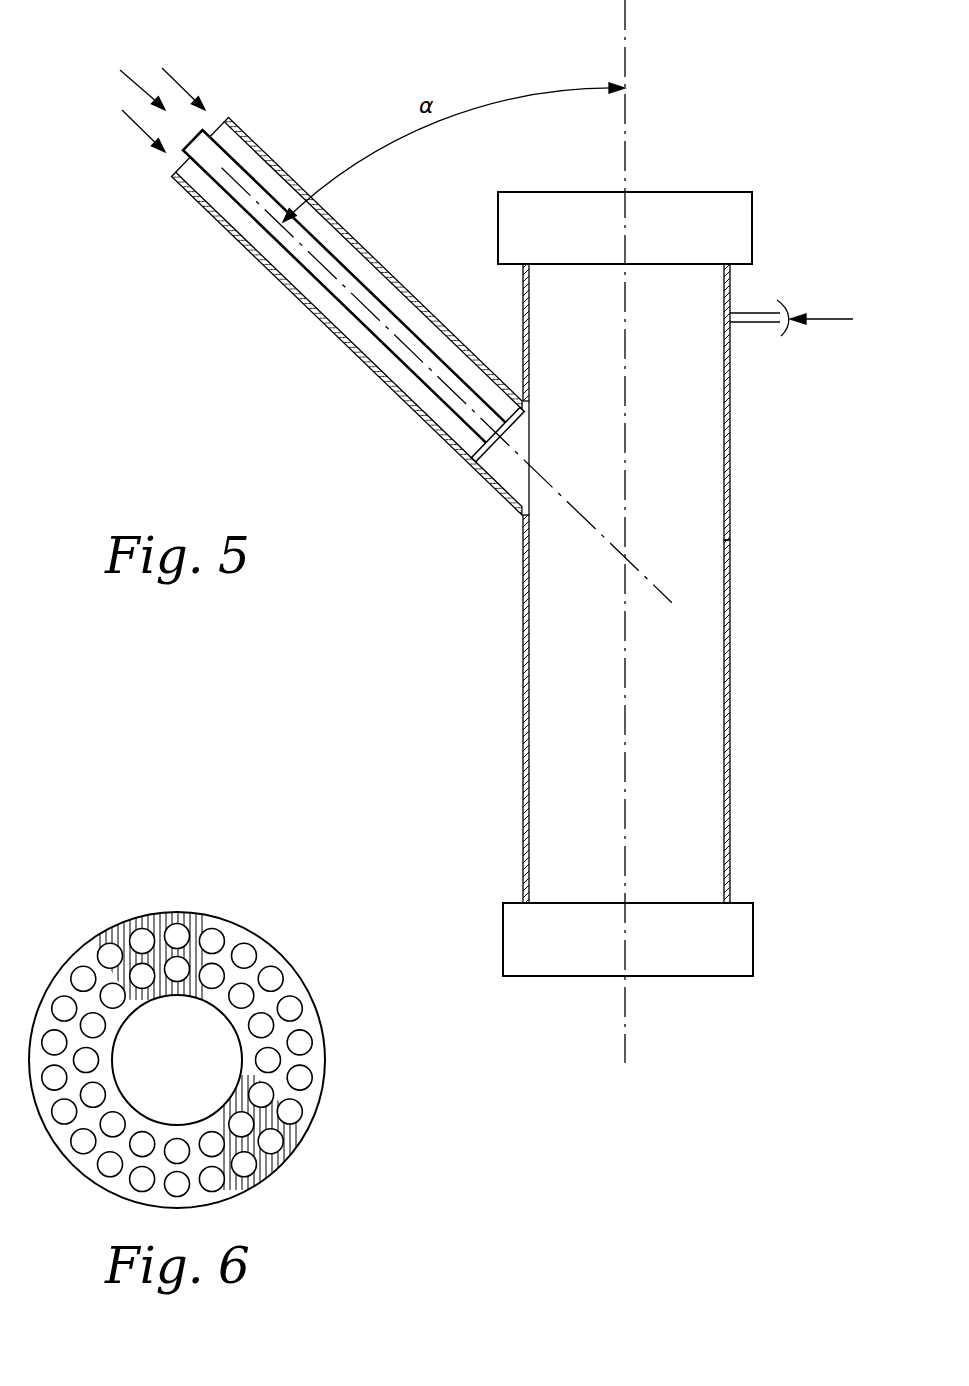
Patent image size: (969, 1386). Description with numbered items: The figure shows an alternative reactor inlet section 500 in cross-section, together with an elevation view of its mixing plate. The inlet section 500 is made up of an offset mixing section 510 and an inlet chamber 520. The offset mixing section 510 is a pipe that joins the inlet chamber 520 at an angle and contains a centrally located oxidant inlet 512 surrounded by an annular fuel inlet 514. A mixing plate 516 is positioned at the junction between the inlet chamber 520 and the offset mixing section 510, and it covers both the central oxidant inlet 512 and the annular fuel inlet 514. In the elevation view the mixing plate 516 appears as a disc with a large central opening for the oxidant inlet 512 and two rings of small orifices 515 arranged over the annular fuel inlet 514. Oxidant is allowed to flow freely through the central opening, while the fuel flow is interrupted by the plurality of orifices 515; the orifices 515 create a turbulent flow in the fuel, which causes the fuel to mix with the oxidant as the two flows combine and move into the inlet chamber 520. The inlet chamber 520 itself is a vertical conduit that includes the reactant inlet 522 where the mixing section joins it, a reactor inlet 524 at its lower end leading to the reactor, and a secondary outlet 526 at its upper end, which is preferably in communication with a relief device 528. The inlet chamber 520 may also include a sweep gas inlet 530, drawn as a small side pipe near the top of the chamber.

In FIG. 5, the reactor inlet section 500 is at (755, 584).
In FIG. 5, the offset mixing section 510 is at (308, 306).
In FIG. 5, the oxidant inlet 512 is at (190, 133).
In FIG. 6, the oxidant inlet 512 is at (198, 1073).
In FIG. 5, the annular fuel inlet 514 is at (215, 117).
In FIG. 6, the annular fuel inlet 514 is at (268, 958).
In FIG. 6, the orifices 515 is at (282, 1012).
In FIG. 5, the mixing plate 516 is at (470, 456).
In FIG. 6, the mixing plate 516 is at (327, 1057).
In FIG. 5, the inlet chamber 520 is at (731, 803).
In FIG. 5, the reactant inlet 522 is at (523, 497).
In FIG. 5, the reactor inlet 524 is at (754, 917).
In FIG. 5, the secondary outlet 526 is at (731, 287).
In FIG. 5, the relief device 528 is at (753, 205).
In FIG. 5, the sweep gas inlet 530 is at (758, 324).